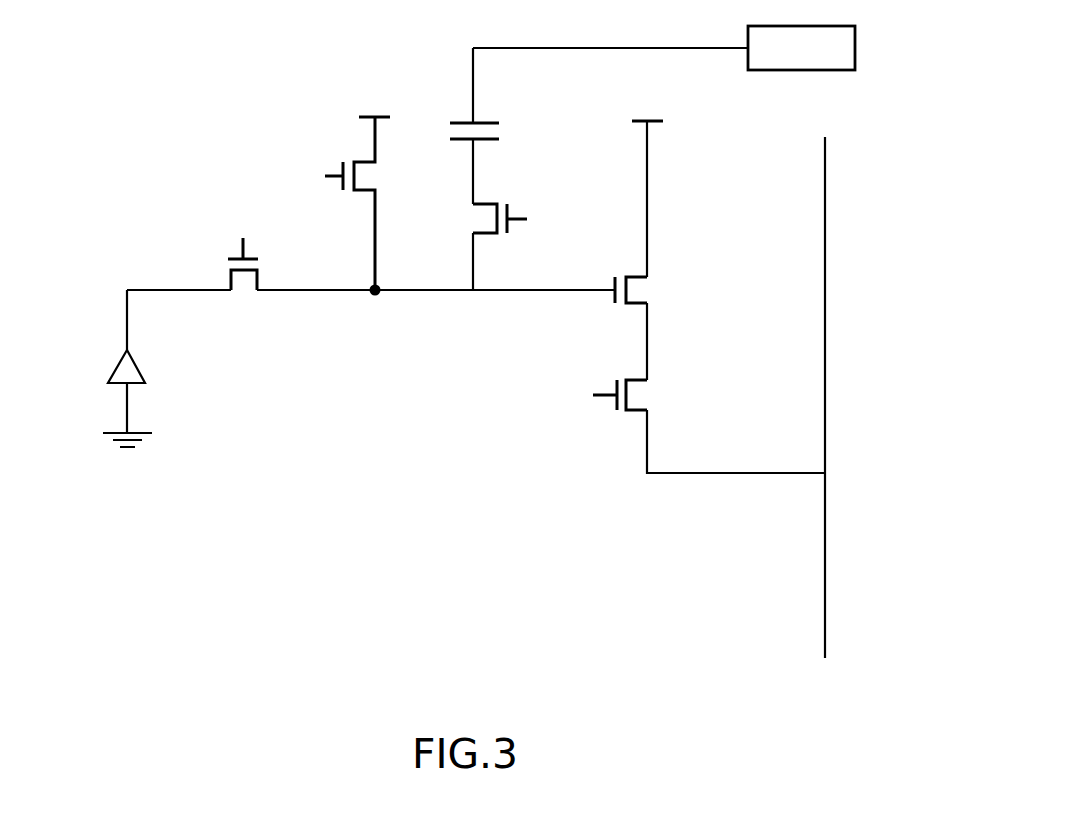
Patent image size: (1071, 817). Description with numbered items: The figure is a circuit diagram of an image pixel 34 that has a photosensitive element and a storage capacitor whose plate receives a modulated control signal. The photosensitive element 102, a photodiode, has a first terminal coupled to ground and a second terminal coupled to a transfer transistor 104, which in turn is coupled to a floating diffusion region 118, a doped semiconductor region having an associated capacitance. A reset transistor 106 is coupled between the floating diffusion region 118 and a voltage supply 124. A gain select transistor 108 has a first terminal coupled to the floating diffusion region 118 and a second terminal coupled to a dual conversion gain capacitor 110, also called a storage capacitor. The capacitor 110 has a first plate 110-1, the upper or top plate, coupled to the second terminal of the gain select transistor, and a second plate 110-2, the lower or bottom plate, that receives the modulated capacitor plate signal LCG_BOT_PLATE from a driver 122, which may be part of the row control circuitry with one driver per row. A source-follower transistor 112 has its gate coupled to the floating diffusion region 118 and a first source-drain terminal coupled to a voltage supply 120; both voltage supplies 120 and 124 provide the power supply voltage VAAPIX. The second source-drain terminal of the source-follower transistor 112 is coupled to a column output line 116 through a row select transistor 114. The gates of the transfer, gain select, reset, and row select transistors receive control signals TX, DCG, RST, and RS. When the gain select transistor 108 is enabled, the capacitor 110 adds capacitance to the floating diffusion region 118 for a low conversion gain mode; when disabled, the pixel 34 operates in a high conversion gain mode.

The image pixel 34 is at (120, 158).
The photosensitive element 102 is at (108, 360).
The transfer transistor 104 is at (245, 295).
The reset transistor 106 is at (380, 177).
The gain select transistor 108 is at (505, 240).
The dual conversion gain capacitor 110 is at (475, 126).
The first plate 110-1 is at (465, 142).
The second plate 110-2 is at (455, 125).
The source-follower transistor 112 is at (670, 262).
The row select transistor 114 is at (653, 392).
The column output line 116 is at (827, 232).
The floating diffusion region 118 is at (358, 278).
The voltage supply 120 is at (677, 132).
The driver 122 is at (780, 72).
The voltage supply 124 is at (413, 122).